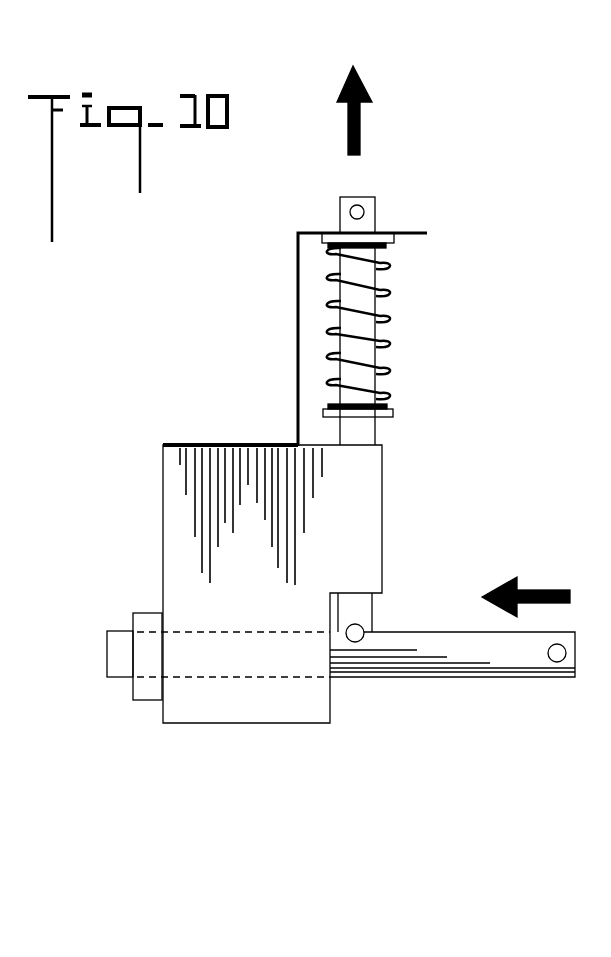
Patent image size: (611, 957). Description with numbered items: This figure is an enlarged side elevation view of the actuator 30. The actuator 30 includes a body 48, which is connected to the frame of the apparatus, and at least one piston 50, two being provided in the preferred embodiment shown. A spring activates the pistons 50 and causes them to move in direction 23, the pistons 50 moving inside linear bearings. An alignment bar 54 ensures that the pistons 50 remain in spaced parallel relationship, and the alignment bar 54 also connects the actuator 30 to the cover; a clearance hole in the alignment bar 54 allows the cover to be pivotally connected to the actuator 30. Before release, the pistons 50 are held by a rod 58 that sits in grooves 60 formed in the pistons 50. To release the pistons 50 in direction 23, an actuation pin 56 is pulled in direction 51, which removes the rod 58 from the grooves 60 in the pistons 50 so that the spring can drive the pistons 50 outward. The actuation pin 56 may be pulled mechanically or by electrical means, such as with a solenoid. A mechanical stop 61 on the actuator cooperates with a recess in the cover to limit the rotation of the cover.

The direction 23 is at (542, 588).
The actuator 30 is at (501, 334).
The body 48 is at (382, 538).
The piston 50 is at (490, 652).
The direction 51 is at (357, 140).
The alignment bar 54 is at (148, 692).
The actuation pin 56 is at (358, 378).
The rod 58 is at (362, 628).
The grooves 60 is at (355, 642).
The mechanical stop 61 is at (130, 631).